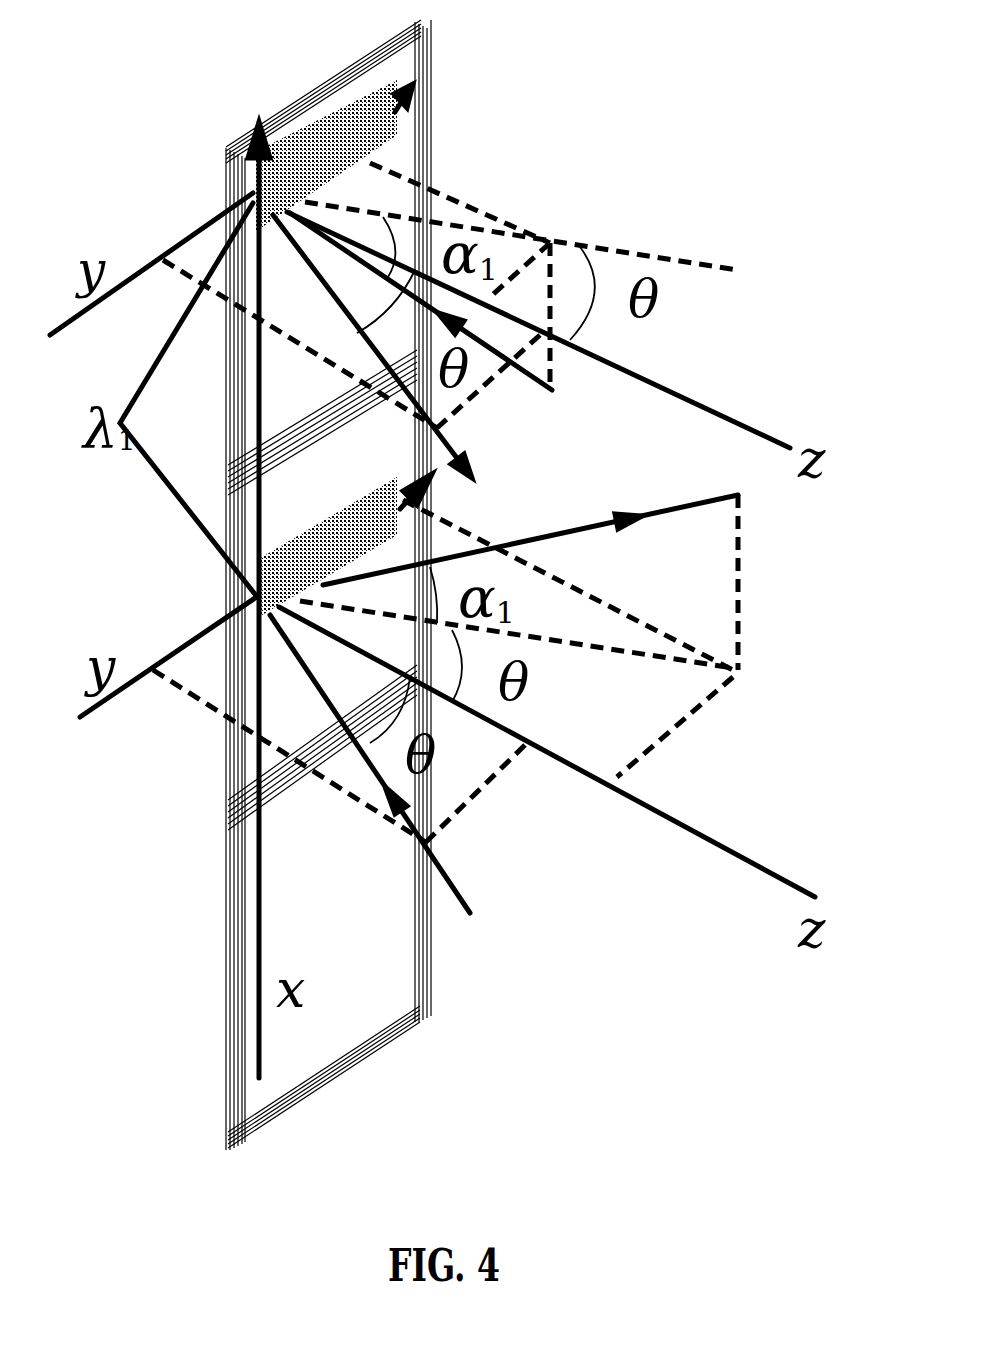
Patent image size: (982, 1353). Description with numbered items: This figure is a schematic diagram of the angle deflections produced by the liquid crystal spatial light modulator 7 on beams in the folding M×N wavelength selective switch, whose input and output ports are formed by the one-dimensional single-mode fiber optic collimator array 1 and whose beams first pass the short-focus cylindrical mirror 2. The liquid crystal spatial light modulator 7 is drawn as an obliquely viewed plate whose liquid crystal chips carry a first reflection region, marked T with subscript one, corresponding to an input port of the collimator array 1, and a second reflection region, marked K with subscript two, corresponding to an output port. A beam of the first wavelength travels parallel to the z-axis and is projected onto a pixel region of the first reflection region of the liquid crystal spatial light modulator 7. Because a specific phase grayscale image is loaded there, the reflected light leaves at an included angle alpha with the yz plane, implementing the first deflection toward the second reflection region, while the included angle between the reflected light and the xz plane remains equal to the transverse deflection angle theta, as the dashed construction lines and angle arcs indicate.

The liquid crystal spatial light modulator 7 is at (316, 1015).
The grating K2 2 is at (384, 148).
The grating T1 1 is at (299, 547).